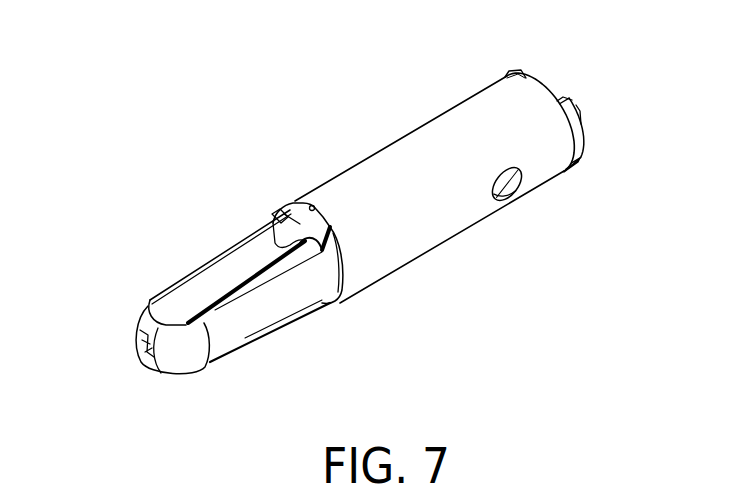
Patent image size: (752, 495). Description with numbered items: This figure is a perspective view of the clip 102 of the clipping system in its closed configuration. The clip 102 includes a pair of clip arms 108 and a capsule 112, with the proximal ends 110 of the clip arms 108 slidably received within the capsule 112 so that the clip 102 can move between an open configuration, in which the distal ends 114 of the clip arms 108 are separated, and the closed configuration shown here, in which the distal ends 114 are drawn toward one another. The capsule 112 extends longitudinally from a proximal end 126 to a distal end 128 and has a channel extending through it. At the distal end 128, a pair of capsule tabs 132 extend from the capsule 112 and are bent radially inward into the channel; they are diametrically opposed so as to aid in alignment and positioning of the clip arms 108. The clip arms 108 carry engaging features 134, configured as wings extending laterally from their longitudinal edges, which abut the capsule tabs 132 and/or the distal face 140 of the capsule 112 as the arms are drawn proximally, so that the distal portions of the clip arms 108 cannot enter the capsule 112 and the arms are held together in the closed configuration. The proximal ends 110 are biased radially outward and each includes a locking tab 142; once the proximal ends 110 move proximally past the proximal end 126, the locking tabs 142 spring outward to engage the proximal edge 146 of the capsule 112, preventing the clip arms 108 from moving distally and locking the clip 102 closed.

The clip 102 is at (350, 122).
The clip arms 108 is at (248, 320).
The proximal ends 110 is at (575, 122).
The capsule 112 is at (450, 128).
The distal ends 114 is at (173, 363).
The proximal end 126 is at (517, 83).
The distal end 128 is at (315, 197).
The capsule tabs 132 is at (292, 221).
The engaging features 134 is at (292, 260).
The distal face 140 is at (338, 305).
The locking tab 142 is at (580, 163).
The proximal edge 146 is at (557, 100).